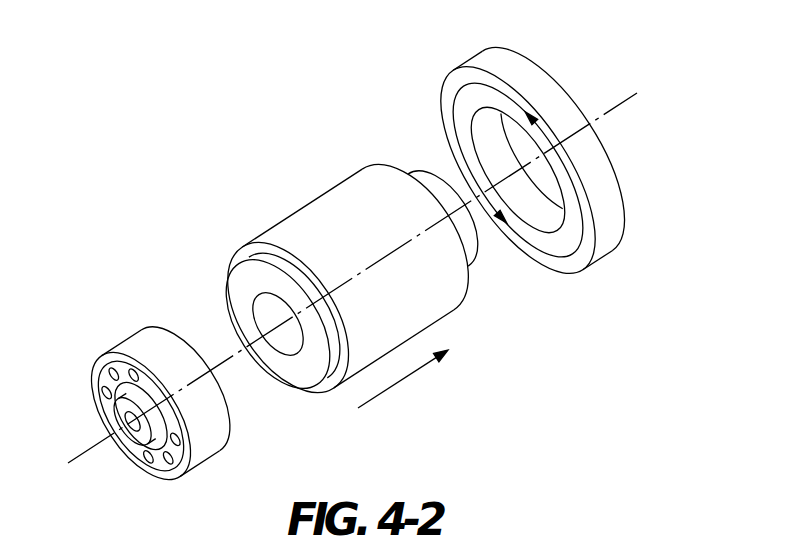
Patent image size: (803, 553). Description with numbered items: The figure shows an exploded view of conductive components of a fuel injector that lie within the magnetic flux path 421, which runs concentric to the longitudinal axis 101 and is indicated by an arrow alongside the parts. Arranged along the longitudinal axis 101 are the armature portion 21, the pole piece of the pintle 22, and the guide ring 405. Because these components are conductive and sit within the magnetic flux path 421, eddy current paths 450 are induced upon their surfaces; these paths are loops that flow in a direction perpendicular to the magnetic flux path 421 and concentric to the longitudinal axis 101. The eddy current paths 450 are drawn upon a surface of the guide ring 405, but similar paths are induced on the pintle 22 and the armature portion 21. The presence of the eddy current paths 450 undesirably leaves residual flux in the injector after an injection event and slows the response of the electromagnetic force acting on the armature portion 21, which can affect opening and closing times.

The armature portion 21 is at (137, 350).
The pintle 22 is at (317, 223).
The longitudinal axis 101 is at (623, 105).
The guide ring 405 is at (482, 63).
The eddy current path 450 is at (572, 268).
The magnetic flux path 421 is at (402, 383).